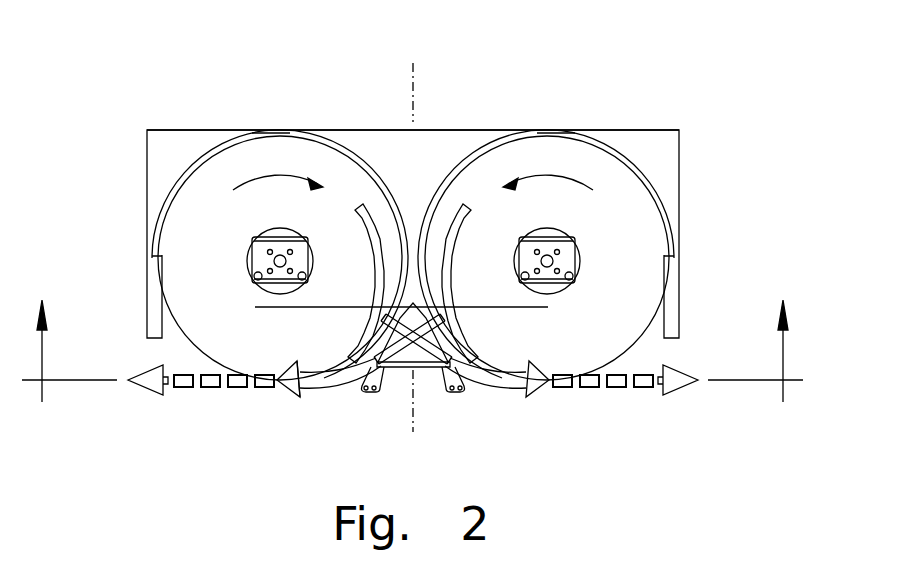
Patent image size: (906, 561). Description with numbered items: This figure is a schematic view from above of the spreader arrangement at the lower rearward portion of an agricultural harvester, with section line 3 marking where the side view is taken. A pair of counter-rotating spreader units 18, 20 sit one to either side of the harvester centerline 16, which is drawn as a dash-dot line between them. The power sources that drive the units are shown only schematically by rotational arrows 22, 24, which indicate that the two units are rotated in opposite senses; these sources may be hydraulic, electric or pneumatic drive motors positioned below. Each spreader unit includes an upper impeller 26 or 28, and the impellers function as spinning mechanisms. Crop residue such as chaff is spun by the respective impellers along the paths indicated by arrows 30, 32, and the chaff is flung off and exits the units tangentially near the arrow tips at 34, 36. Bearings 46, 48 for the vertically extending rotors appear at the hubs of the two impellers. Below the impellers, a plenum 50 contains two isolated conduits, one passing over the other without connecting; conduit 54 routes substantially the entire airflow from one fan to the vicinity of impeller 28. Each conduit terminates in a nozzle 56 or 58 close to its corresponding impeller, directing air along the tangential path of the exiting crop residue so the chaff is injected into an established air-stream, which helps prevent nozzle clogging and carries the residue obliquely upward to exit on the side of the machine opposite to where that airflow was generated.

The section line 3- 3 is at (412, 337).
The harvester centerline 16 is at (412, 90).
The spreader unit 18 is at (650, 117).
The spreader unit 20 is at (176, 117).
The rotational arrow 22 is at (547, 176).
The rotational arrow 24 is at (278, 176).
The upper impeller 26 is at (603, 292).
The upper impeller 28 is at (216, 274).
The arrow 30 is at (458, 222).
The arrow 32 is at (367, 218).
The arrow tip 34 is at (552, 392).
The arrow tip 36 is at (277, 387).
The bearing 46 is at (561, 263).
The bearing 48 is at (269, 252).
The plenum 50 is at (425, 379).
The conduit 54 is at (322, 392).
The nozzle 56 is at (529, 392).
The nozzle 58 is at (298, 384).